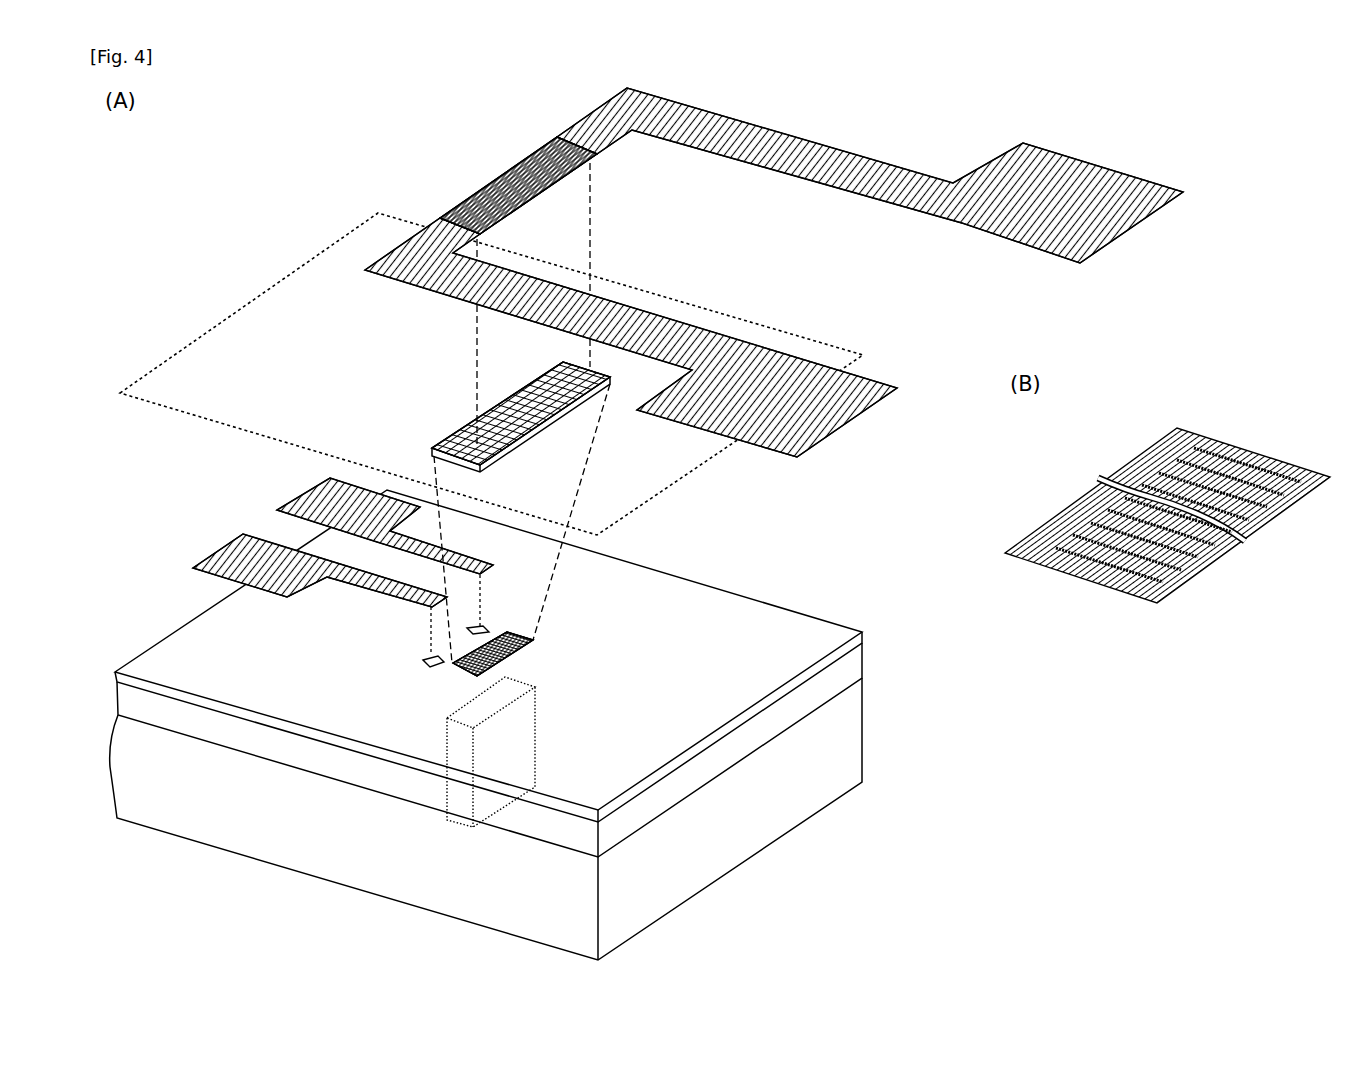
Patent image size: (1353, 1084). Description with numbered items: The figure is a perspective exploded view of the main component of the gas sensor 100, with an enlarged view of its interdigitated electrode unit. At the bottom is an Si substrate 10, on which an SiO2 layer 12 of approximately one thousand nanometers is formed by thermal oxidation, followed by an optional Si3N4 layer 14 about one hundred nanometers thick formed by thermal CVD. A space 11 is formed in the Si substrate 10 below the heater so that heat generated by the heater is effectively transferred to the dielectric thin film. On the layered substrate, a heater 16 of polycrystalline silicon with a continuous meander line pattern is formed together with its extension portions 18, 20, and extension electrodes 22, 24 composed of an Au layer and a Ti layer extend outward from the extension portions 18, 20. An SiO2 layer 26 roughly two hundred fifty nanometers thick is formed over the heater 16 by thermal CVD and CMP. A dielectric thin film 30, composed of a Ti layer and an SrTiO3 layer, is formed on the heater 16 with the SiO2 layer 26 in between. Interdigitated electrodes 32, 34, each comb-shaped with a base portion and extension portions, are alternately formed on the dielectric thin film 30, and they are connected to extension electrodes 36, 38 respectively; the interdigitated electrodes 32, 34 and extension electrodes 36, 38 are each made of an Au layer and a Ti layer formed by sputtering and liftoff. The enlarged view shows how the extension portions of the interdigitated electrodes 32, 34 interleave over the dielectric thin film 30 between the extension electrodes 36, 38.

The piezoelectric device 100 is at (243, 172).
The Si substrate 10 is at (857, 758).
The space 11 is at (540, 757).
The SiO2 layer 12 is at (867, 664).
The Si3N4 layer 14 is at (833, 627).
The heater 16 is at (515, 652).
The extension portion 18 is at (423, 660).
The extension portion 20 is at (488, 628).
The extension electrode 22 is at (205, 562).
The extension electrode 24 is at (285, 505).
The SiO2 layer 26 is at (248, 302).
The dielectric thin film 30 is at (448, 438).
The interdigitated electrode 32 is at (443, 213).
The interdigitated electrode 34 is at (460, 197).
The extension electrode 36 is at (394, 272).
The extension electrode 38 is at (578, 127).